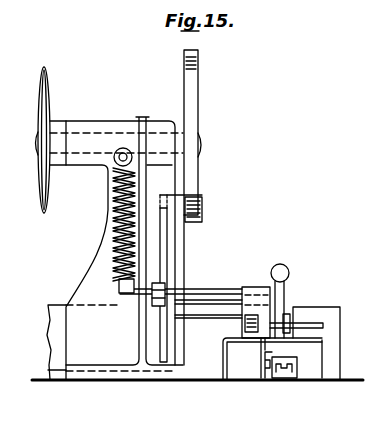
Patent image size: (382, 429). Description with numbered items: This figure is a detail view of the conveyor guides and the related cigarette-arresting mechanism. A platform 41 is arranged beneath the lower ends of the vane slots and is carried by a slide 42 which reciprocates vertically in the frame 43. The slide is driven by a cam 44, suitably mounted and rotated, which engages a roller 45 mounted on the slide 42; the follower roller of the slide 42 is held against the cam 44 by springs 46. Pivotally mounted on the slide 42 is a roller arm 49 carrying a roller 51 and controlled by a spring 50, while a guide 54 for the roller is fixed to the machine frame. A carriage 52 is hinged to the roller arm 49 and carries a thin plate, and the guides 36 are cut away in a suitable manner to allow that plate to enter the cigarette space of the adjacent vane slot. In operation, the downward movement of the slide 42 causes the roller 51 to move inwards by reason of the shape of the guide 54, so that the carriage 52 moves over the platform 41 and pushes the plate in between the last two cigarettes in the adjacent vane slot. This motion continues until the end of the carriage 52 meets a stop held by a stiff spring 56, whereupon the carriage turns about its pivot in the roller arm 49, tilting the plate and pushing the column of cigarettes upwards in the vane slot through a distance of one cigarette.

The guides 36 is at (335, 318).
The platform 41 is at (233, 340).
The slide 42 is at (172, 245).
The frame 43 is at (142, 122).
The cam 44 is at (193, 97).
The roller 45 is at (203, 222).
The springs 46 is at (110, 232).
The roller arm 49 is at (290, 290).
The spring 50 is at (289, 271).
The roller 51 is at (286, 324).
The carriage 52 is at (296, 323).
The guide 54 is at (278, 372).
The stiff spring 56 is at (266, 378).